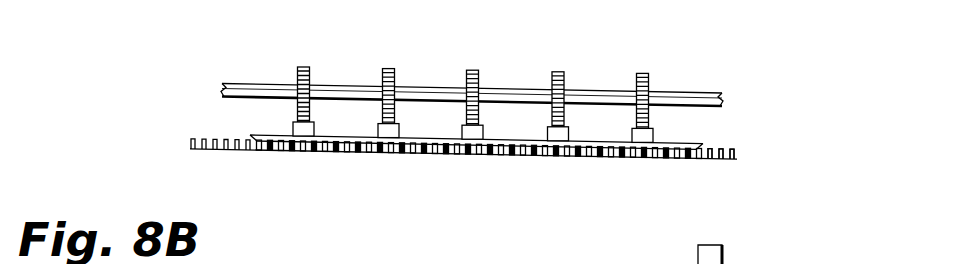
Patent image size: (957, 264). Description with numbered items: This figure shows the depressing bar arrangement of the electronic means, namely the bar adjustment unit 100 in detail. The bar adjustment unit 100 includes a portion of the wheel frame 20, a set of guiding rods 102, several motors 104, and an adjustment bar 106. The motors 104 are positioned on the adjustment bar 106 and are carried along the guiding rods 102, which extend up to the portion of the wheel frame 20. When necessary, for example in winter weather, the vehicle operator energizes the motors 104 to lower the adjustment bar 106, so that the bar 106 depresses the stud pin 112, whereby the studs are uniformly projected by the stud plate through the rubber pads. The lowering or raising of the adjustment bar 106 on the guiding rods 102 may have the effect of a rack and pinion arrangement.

The bar adjustment unit 100 is at (275, 30).
The wheel frame 20 is at (680, 90).
The guiding rods 102 is at (467, 72).
The motors 104 is at (303, 128).
The adjustment bar 106 is at (270, 136).
The stud pin 112 is at (719, 150).